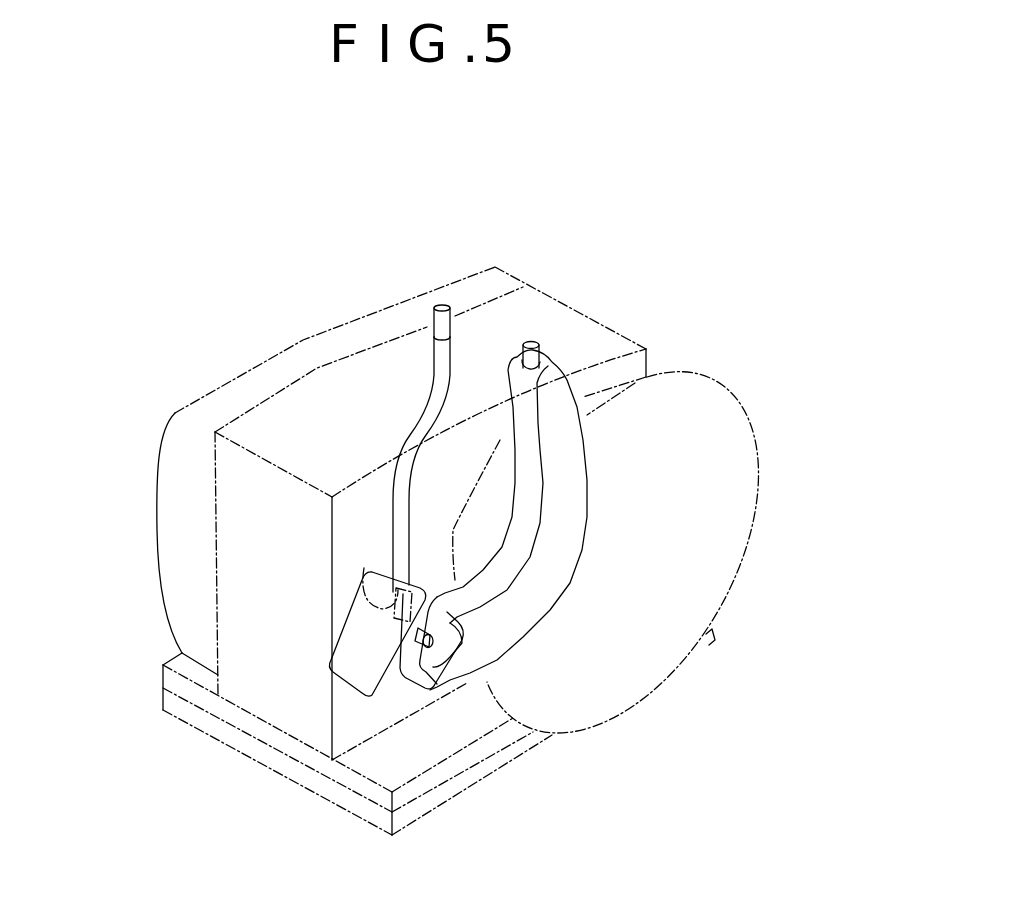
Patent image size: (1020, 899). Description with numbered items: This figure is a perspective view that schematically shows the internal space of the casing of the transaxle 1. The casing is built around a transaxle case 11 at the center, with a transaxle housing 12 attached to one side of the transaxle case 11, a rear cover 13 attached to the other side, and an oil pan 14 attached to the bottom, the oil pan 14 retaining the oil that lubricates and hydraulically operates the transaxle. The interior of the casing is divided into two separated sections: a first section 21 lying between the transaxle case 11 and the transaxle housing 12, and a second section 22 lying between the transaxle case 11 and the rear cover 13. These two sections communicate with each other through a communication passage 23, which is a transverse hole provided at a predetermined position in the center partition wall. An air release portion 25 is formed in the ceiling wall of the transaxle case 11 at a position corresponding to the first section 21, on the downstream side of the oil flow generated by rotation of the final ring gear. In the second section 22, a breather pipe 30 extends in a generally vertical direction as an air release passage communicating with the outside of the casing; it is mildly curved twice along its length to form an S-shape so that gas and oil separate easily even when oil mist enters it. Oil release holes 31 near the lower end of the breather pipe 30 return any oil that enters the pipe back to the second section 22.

The transaxle 1 is at (513, 244).
The transaxle case 11 is at (595, 323).
The transaxle housing 12 is at (683, 387).
The rear cover 13 is at (170, 564).
The oil pan 14 is at (352, 805).
The first section 21 is at (557, 585).
The second section 22 is at (363, 634).
The communication passage 23 is at (423, 627).
The air release portion 25 is at (533, 341).
The breather pipe 30 is at (420, 413).
The oil release holes 31 is at (374, 568).